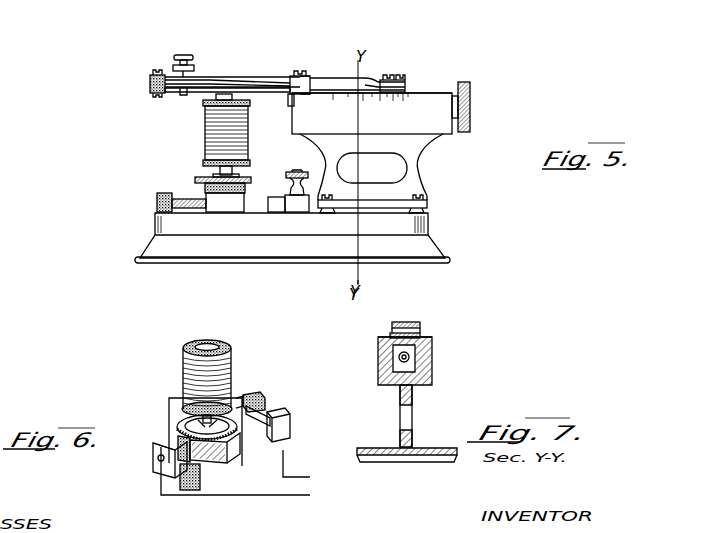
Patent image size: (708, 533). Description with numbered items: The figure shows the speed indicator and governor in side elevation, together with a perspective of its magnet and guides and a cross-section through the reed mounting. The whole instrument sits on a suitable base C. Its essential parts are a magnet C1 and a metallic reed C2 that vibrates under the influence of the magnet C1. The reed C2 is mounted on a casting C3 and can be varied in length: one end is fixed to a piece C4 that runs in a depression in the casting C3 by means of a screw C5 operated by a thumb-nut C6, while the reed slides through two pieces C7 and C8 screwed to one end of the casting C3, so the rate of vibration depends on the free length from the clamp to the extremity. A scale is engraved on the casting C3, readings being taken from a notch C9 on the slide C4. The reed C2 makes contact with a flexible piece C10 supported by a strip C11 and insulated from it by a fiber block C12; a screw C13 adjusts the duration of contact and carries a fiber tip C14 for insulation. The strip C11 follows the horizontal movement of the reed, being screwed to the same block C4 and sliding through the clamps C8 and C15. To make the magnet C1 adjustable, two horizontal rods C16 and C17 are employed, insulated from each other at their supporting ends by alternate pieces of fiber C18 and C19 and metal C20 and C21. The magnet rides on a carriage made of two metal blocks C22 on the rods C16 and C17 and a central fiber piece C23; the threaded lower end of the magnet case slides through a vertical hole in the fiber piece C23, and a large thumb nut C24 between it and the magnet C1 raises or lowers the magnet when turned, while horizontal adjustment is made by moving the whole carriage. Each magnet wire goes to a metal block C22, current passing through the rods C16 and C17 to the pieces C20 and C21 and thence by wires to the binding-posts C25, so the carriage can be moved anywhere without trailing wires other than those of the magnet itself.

In FIG. 5, the base C is at (436, 246).
In FIG. 5, the magnet C1 is at (202, 144).
In FIG. 6, the magnet C1 is at (184, 360).
In FIG. 5, the metallic reed C2 is at (221, 83).
In FIG. 7, the metallic reed C2 is at (422, 333).
In FIG. 5, the casting C3 is at (418, 167).
In FIG. 7, the casting C3 is at (431, 365).
In FIG. 5, the slide piece C4 is at (407, 91).
In FIG. 7, the slide piece C4 is at (428, 339).
In FIG. 7, the screw C5 is at (400, 357).
In FIG. 5, the thumb-nut C6 is at (472, 91).
In FIG. 5, the clamp piece C7 is at (292, 91).
In FIG. 5, the clamp piece C8 is at (309, 85).
In FIG. 5, the notch C9 is at (403, 86).
In FIG. 5, the flexible contact piece C10 is at (193, 92).
In FIG. 5, the supporting strip C11 is at (205, 78).
In FIG. 7, the supporting strip C11 is at (414, 320).
In FIG. 5, the fiber block C12 is at (150, 84).
In FIG. 5, the adjusting screw C13 is at (177, 56).
In FIG. 5, the fiber tip C14 is at (180, 93).
In FIG. 5, the clamp C15 is at (304, 82).
In FIG. 5, the horizontal rod C16 is at (184, 198).
In FIG. 6, the horizontal rod C16 is at (258, 432).
In FIG. 6, the horizontal rod C17 is at (238, 398).
In FIG. 6, the fiber piece C18 is at (252, 397).
In FIG. 5, the fiber piece C19 is at (151, 204).
In FIG. 6, the fiber piece C19 is at (192, 488).
In FIG. 5, the metal piece C20 is at (277, 204).
In FIG. 6, the metal piece C20 is at (290, 419).
In FIG. 6, the metal piece C21 is at (166, 441).
In FIG. 5, the metal block C22 is at (222, 203).
In FIG. 6, the metal block C22 is at (250, 517).
In FIG. 5, the fiber piece C23 is at (247, 190).
In FIG. 6, the fiber piece C23 is at (215, 465).
In FIG. 5, the thumb nut C24 is at (250, 180).
In FIG. 6, the thumb nut C24 is at (187, 420).
In FIG. 5, the binding-post C25 is at (298, 203).